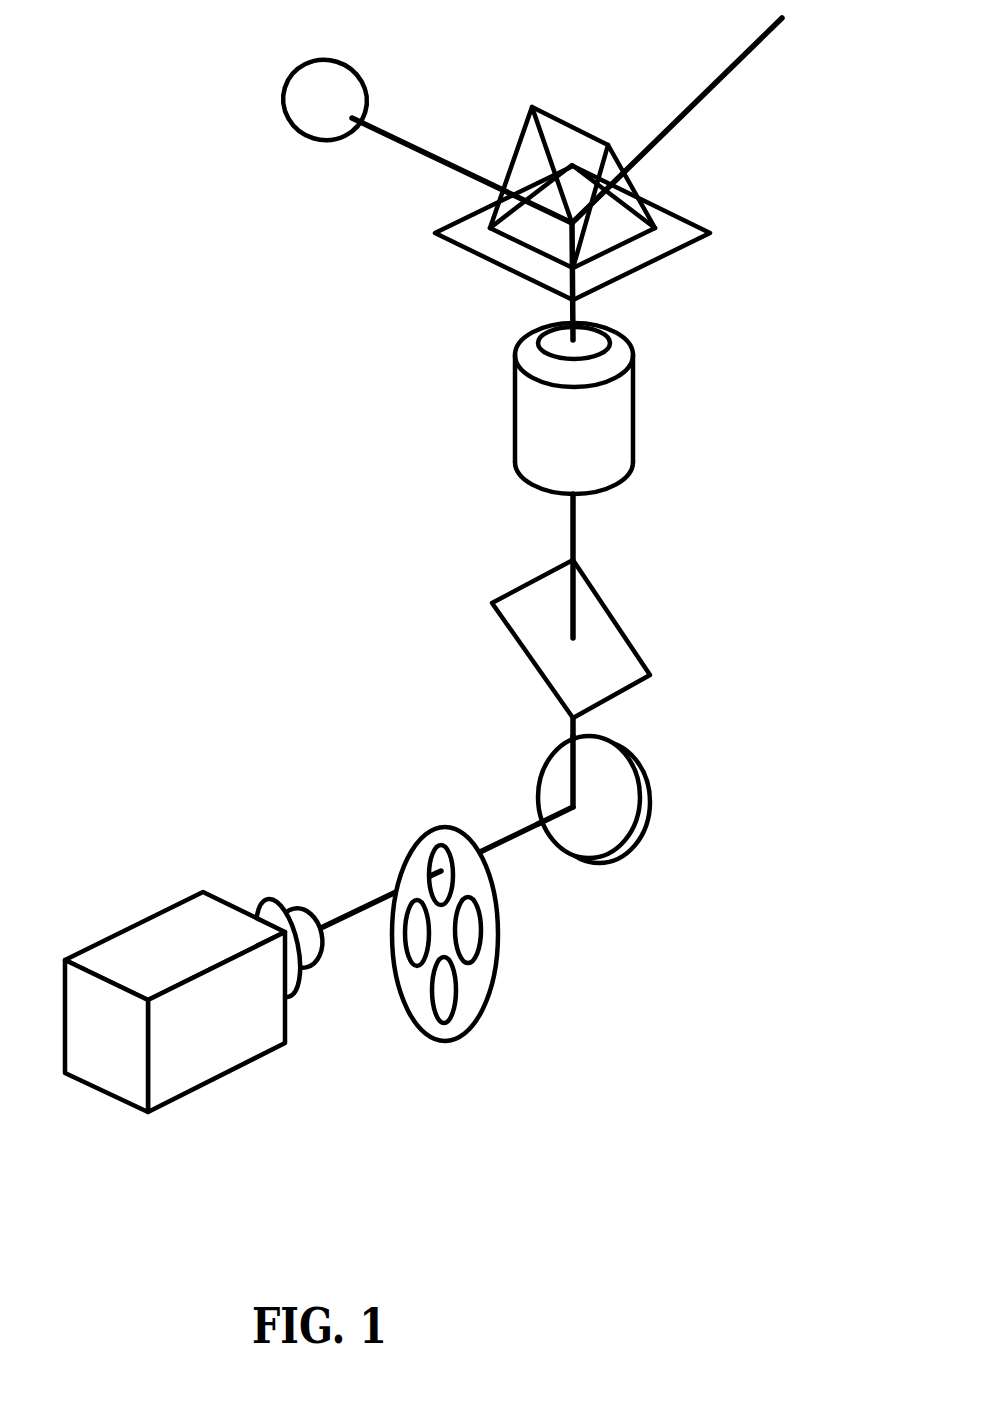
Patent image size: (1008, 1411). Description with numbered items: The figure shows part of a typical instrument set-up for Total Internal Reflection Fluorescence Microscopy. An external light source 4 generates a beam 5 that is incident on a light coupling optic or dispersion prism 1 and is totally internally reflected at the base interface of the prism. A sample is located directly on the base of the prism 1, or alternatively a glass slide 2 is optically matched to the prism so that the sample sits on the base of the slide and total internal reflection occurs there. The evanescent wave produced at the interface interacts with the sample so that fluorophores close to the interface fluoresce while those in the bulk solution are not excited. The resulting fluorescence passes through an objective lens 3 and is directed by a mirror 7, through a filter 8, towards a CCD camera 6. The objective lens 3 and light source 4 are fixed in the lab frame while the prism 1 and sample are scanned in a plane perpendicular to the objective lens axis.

The dispersion prism 1 is at (568, 120).
The glass slide 2 is at (692, 245).
The objective lens 3 is at (517, 400).
The external light source 4 is at (315, 78).
The beam 5 is at (403, 137).
The CCD camera 6 is at (157, 912).
The mirror 7 is at (550, 768).
The filter 8 is at (487, 1000).